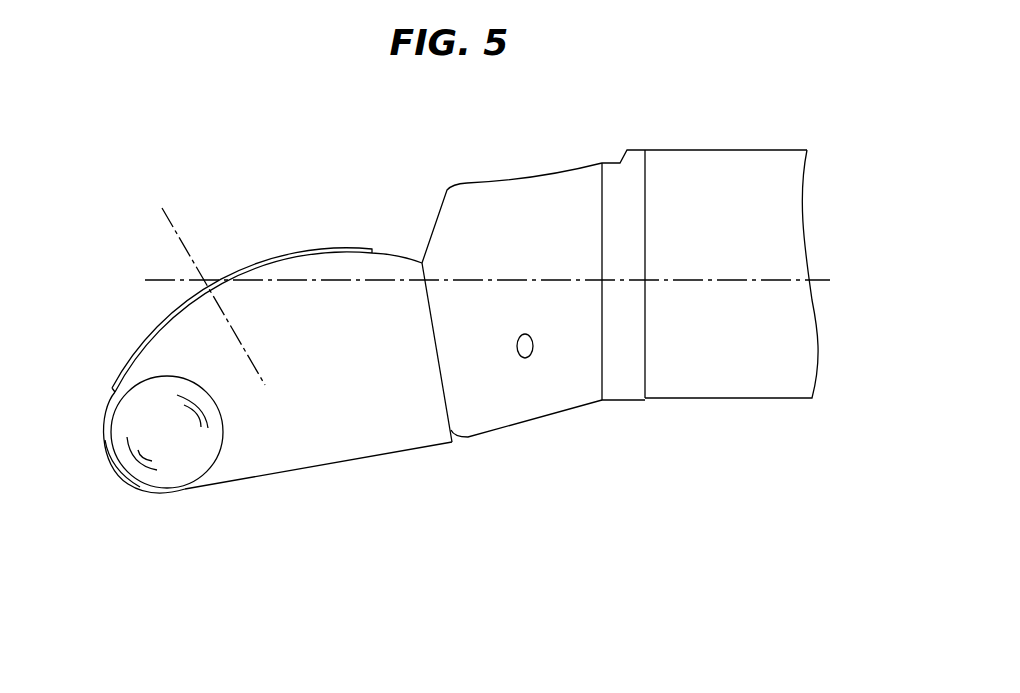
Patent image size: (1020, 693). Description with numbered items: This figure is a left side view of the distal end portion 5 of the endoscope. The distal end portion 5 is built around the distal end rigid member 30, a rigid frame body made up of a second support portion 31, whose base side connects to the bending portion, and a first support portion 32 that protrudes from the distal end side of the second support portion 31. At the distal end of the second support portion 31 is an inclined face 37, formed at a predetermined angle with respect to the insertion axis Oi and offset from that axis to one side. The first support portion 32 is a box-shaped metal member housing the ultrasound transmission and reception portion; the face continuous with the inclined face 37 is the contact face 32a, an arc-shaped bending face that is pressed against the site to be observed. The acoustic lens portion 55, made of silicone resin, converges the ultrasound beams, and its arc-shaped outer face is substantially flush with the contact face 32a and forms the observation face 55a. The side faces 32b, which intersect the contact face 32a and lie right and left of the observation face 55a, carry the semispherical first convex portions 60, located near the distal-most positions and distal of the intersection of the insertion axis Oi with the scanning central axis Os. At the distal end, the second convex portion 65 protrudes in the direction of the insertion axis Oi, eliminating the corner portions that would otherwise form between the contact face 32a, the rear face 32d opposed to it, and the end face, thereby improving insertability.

The distal end portion 5 is at (468, 162).
The distal end rigid member 30 is at (645, 596).
The second support portion 31 is at (812, 559).
The first support portion 32 is at (110, 559).
The contact face 32a is at (315, 257).
The side faces 32b is at (253, 428).
The rear face 32d is at (295, 471).
The inclined face 37 is at (430, 228).
The acoustic lens portion 55 is at (151, 327).
The observation face 55a is at (262, 268).
The first convex portions 60 is at (173, 453).
The second convex portion 65 is at (107, 450).
The scanning central axis Os is at (168, 222).
The insertion axis Oi is at (173, 280).